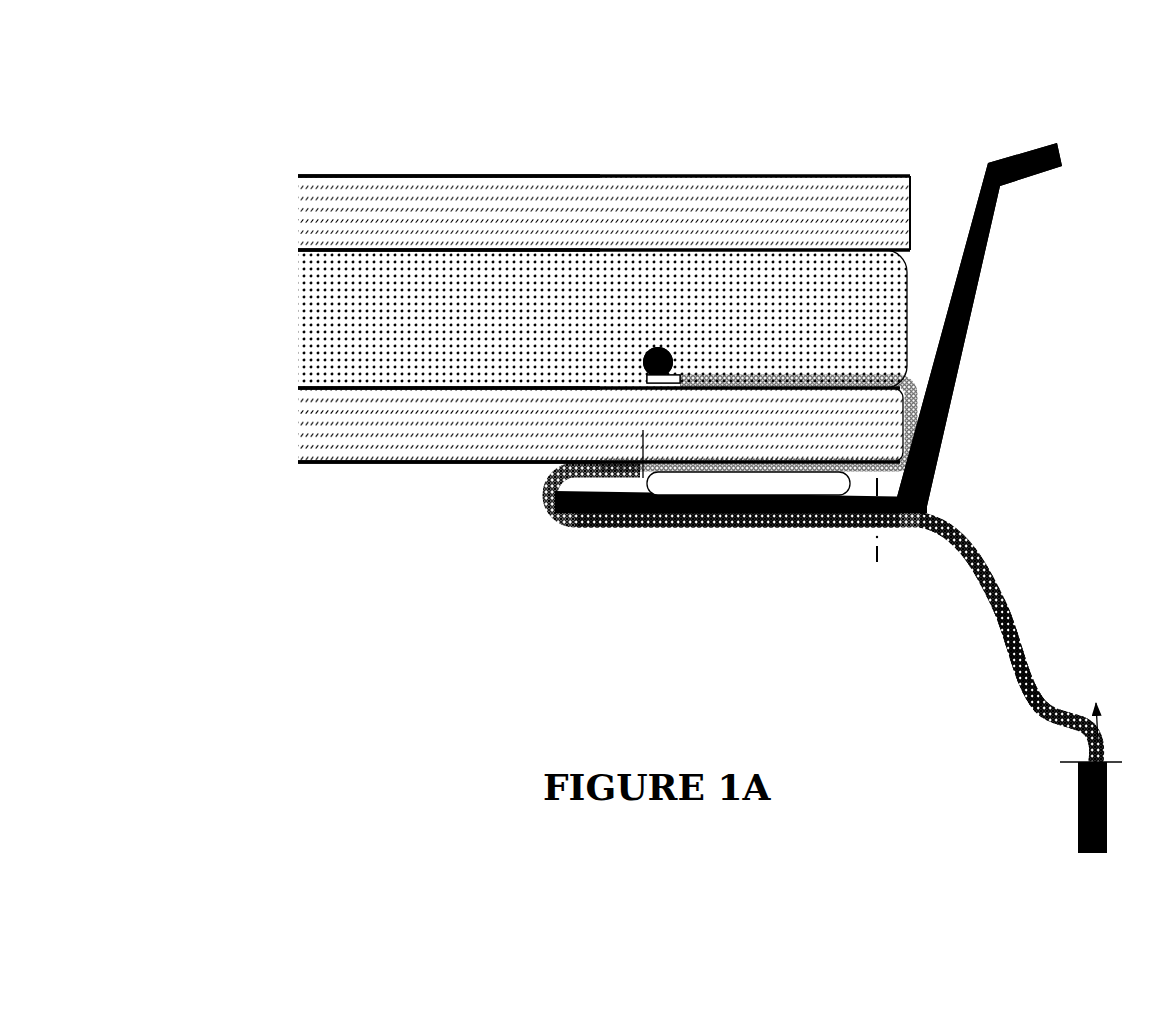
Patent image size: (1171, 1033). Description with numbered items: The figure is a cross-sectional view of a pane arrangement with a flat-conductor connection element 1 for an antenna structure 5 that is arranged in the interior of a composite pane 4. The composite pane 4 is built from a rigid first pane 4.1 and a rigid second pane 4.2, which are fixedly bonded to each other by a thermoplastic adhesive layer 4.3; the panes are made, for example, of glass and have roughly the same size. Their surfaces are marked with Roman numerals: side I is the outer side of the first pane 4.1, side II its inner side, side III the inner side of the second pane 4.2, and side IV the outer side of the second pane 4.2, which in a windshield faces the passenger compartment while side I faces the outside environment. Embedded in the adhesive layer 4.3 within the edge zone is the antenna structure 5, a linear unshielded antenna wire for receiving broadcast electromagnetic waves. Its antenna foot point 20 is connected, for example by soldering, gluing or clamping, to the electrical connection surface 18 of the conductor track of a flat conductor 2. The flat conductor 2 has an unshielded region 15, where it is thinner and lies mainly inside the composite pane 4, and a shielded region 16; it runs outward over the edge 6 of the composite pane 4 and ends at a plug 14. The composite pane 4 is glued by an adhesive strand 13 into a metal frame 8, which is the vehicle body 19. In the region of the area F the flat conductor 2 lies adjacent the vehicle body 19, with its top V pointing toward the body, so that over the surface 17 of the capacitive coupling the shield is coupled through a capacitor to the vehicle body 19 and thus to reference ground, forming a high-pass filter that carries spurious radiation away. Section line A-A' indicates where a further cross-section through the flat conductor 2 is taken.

The flat-conductor connection element 1 is at (1017, 548).
The flat conductor 2 is at (977, 583).
The composite pane 4 is at (260, 176).
The first pane 4.1 is at (417, 436).
The second pane 4.2 is at (567, 195).
The thermoplastic adhesive layer 4.3 is at (447, 290).
The antenna structure 5 is at (660, 348).
The antenna foot point 20 is at (658, 362).
The edge of the pane 6 is at (914, 322).
The metal frame 8 is at (988, 247).
The vehicle body 19 is at (979, 329).
The adhesive strand 13 is at (697, 487).
The plug 14 is at (1078, 808).
The unshielded region 15 is at (675, 367).
The shielded region 16 is at (825, 587).
The surface of the capacitive coupling 17 is at (620, 528).
The electrical connection surface 18 is at (683, 390).
The section line A-A' A is at (880, 486).
The coupling area F is at (800, 524).
The outer side of the first pane I is at (316, 174).
The inner side of the first pane II is at (320, 257).
The inner side of the second pane III is at (327, 382).
The outer side of the second pane IV is at (304, 466).
The top of the flat conductor V is at (1022, 633).